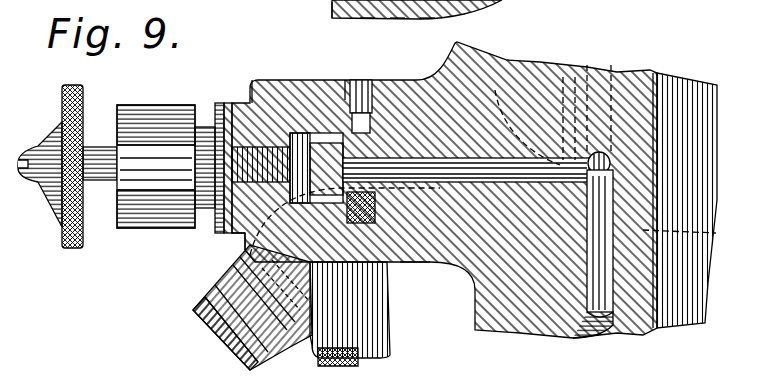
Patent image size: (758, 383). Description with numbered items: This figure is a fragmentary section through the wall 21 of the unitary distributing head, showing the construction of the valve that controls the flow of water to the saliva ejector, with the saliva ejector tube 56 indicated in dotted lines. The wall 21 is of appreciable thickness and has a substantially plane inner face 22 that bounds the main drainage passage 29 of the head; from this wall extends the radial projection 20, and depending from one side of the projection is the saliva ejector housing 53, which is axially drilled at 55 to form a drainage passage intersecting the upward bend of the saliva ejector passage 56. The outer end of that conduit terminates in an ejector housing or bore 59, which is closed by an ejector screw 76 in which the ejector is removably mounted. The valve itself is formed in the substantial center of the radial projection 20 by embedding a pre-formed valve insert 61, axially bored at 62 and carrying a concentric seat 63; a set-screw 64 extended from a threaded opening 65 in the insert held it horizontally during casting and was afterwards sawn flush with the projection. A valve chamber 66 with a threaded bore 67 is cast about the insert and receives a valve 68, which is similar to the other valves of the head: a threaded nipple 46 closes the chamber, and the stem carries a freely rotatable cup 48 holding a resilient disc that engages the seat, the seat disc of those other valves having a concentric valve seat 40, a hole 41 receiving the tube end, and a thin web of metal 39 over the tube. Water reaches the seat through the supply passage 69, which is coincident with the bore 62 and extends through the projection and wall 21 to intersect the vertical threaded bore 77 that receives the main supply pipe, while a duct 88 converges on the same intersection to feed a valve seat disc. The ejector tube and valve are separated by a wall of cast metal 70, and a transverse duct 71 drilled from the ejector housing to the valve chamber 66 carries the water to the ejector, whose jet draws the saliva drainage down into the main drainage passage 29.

The radial projection 20 is at (297, 80).
The wall 21 is at (537, 77).
The inner face 22 is at (612, 152).
The main drainage passage 29 is at (697, 173).
The thin web of disc metal 39 is at (427, 19).
The valve seat 40 is at (397, 19).
The hole 41 is at (487, 12).
The threaded nipple 46 is at (323, 0).
The cup 48 is at (367, 19).
The saliva ejector housing 53 is at (218, 268).
The drainage passage 55 is at (360, 358).
The saliva ejector passage 56 is at (500, 85).
The ejector housing or bore 59 is at (307, 292).
The valve insert 61 is at (392, 97).
The bore 62 is at (418, 262).
The seat 63 is at (337, 97).
The set-screw 64 is at (377, 64).
The threaded opening 65 is at (387, 97).
The valve chamber 66 is at (323, 100).
The threaded bore 67 is at (273, 127).
The valve 68 is at (180, 104).
The water supply passage 69 is at (563, 127).
The wall of cast metal 70 is at (237, 233).
The transverse duct 71 is at (243, 247).
The ejector screw 76 is at (203, 337).
The threaded bore 77 is at (607, 202).
The duct 88 is at (665, 158).